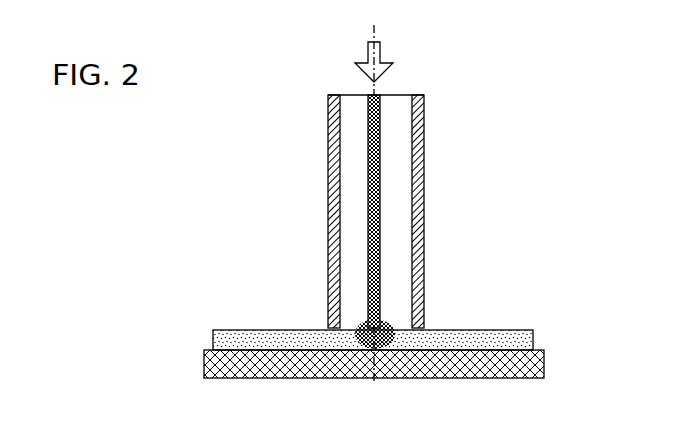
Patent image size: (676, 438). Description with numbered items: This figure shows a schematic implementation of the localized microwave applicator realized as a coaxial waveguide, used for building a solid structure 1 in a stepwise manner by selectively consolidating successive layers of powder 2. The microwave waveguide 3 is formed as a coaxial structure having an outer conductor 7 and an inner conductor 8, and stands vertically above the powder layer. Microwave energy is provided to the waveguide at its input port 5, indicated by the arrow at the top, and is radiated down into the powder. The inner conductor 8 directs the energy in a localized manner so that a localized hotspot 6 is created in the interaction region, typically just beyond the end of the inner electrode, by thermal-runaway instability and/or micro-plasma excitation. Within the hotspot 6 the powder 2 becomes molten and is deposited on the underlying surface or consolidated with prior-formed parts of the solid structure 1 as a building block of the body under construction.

The solid structure 1 is at (308, 383).
The powder 2 is at (268, 329).
The microwave waveguide 3 is at (401, 211).
The input port 5 is at (402, 45).
The localized hotspot 6 is at (395, 325).
The outer conductor 7 is at (328, 193).
The inner conductor 8 is at (380, 213).